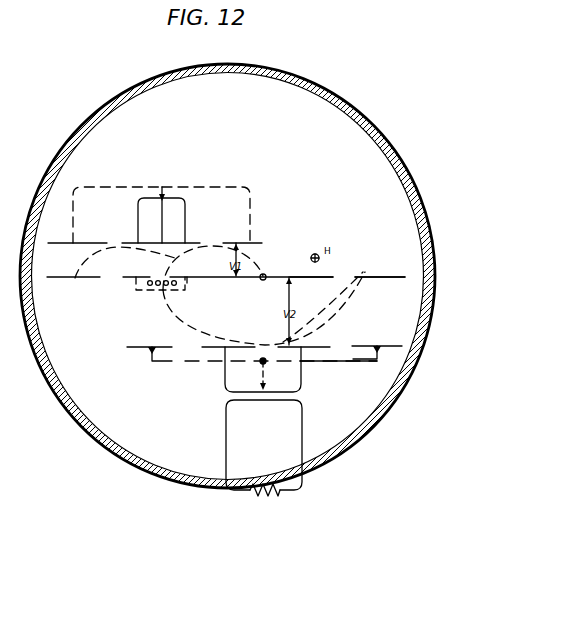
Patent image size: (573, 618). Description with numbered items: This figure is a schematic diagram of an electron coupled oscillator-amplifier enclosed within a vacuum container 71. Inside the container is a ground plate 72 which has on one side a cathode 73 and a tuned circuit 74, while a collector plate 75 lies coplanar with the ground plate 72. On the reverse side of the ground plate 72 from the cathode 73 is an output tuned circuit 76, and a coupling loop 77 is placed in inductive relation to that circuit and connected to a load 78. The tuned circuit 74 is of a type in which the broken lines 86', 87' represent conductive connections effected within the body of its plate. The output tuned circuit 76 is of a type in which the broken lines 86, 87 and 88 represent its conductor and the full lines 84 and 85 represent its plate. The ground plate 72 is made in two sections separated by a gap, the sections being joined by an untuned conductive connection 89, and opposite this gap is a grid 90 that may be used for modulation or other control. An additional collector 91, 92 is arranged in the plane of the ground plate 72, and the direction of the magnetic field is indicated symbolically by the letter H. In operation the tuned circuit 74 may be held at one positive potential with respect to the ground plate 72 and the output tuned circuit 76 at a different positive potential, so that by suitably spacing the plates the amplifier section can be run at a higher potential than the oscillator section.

The vacuum container 71 is at (397, 178).
The ground plate 72 is at (305, 277).
The cathode 73 is at (265, 274).
The tuned circuit 74 is at (180, 209).
The collector plate 75 is at (72, 278).
The output tuned circuit 76 is at (297, 375).
The coupling loop 77 is at (226, 427).
The load 78 is at (265, 493).
The plate (full line) 84 is at (392, 343).
The plate (full line) 85 is at (140, 349).
The conductor (broken line) 86 is at (338, 370).
The conductor (broken line) 87 is at (261, 375).
The conductor (broken line) 88 is at (258, 372).
The untuned conductive connection 89 is at (158, 290).
The grid 90 is at (177, 283).
The additional collector 91 is at (397, 277).
The additional collector 92 is at (363, 279).
The conductive connection (broken line) 86' is at (206, 203).
The conductive connection (broken line) 87' is at (117, 203).